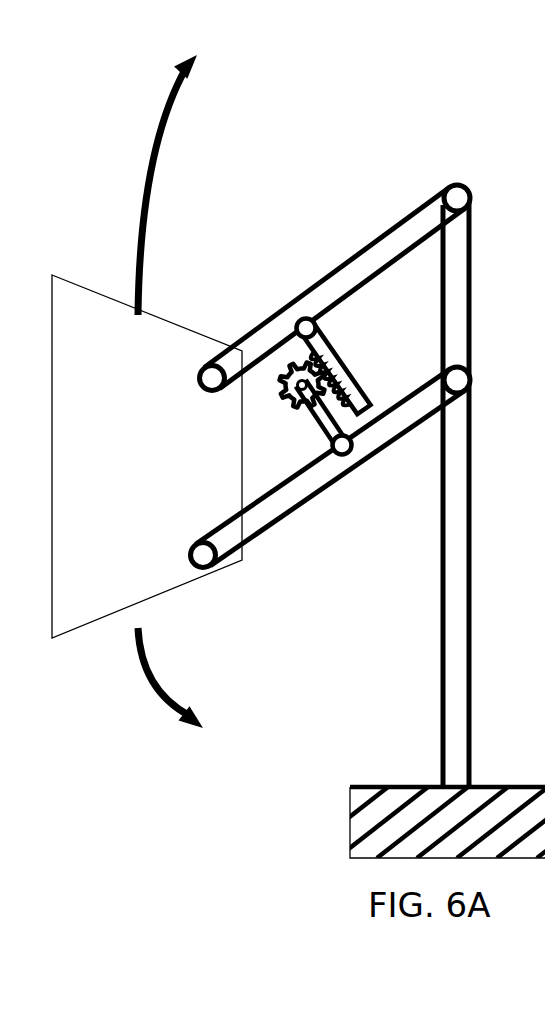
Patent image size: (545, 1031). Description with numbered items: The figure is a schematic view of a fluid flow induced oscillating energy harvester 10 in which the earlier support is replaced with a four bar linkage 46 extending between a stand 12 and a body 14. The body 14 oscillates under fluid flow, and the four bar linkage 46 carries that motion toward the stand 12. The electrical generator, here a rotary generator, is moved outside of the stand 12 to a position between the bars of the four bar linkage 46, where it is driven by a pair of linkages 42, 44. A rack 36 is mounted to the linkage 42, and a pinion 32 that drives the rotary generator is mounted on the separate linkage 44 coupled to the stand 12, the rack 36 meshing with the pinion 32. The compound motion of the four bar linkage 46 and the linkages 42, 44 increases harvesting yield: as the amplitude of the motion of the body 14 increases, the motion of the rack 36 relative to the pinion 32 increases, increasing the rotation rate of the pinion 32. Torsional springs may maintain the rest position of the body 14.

The oscillating energy harvester 10 is at (318, 614).
The stand 12 is at (441, 598).
The body 14 is at (168, 321).
The pinion 32 is at (291, 405).
The rack 36 is at (301, 359).
The linkage 42 is at (318, 362).
The linkage 44 is at (324, 427).
The four bar linkage 46 is at (330, 275).